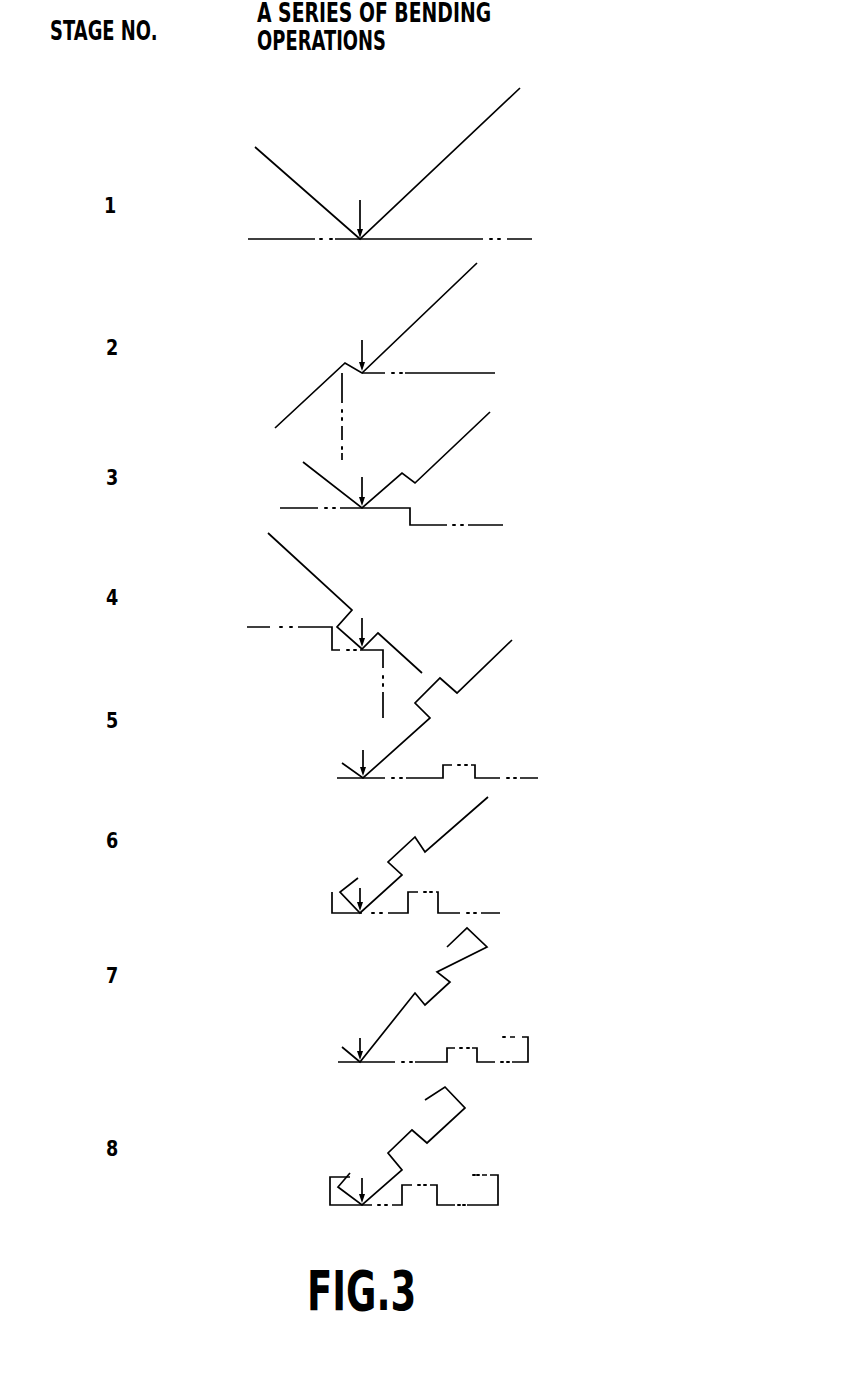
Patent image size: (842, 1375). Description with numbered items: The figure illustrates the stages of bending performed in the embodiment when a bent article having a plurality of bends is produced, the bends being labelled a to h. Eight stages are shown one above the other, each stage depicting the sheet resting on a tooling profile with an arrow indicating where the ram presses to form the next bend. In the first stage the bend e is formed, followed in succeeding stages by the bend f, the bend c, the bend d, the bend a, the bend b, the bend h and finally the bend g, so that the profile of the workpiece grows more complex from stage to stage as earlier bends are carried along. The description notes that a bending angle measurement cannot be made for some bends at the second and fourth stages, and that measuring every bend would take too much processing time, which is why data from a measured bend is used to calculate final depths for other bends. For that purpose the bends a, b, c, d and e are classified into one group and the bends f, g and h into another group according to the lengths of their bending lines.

The bend a is at (417, 867).
The bend b is at (421, 961).
The bend c is at (396, 790).
The bend d is at (354, 833).
The bend e is at (387, 624).
The bend f is at (376, 723).
The bend g is at (401, 1158).
The bend h is at (396, 1063).